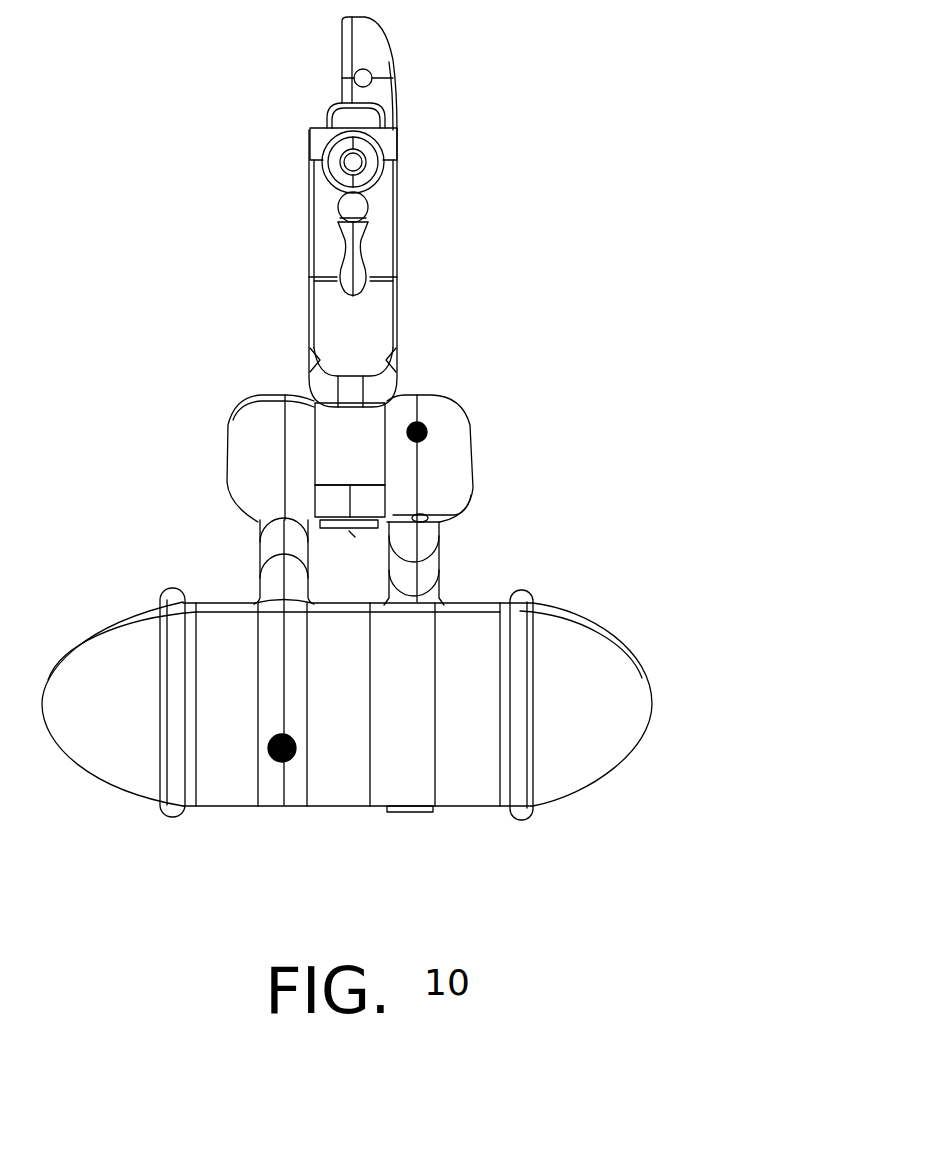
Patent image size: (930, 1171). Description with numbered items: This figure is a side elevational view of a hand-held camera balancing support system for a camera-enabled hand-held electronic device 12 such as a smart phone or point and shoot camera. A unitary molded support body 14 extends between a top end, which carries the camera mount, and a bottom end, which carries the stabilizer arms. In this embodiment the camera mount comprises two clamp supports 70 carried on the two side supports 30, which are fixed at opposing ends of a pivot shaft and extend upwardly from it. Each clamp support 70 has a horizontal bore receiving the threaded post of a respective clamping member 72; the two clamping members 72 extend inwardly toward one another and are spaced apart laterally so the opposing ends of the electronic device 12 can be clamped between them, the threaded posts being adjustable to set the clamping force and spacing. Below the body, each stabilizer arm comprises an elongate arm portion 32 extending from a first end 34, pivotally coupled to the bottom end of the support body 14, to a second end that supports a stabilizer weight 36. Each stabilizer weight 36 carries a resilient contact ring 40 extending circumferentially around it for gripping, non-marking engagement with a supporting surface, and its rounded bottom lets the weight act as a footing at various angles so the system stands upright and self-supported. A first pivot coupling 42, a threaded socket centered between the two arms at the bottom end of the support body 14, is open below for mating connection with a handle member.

The hand-held electronic device 12 is at (370, 45).
The clamping member 72 is at (363, 162).
The clamp support 70 is at (383, 233).
The side support 30 is at (383, 340).
The support body 14 is at (362, 467).
The first end 34 is at (252, 440).
The elongate arm portion 32 is at (280, 550).
The first pivot coupling 42 is at (352, 537).
The stabilizer weight 36 is at (343, 790).
The contact ring 40 is at (172, 817).